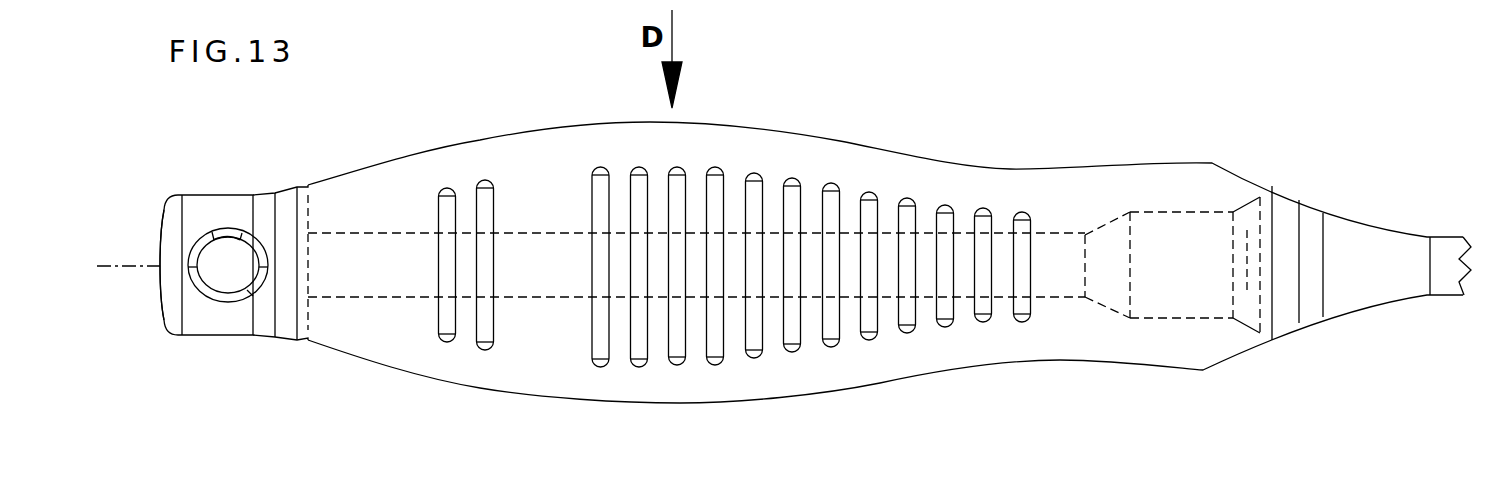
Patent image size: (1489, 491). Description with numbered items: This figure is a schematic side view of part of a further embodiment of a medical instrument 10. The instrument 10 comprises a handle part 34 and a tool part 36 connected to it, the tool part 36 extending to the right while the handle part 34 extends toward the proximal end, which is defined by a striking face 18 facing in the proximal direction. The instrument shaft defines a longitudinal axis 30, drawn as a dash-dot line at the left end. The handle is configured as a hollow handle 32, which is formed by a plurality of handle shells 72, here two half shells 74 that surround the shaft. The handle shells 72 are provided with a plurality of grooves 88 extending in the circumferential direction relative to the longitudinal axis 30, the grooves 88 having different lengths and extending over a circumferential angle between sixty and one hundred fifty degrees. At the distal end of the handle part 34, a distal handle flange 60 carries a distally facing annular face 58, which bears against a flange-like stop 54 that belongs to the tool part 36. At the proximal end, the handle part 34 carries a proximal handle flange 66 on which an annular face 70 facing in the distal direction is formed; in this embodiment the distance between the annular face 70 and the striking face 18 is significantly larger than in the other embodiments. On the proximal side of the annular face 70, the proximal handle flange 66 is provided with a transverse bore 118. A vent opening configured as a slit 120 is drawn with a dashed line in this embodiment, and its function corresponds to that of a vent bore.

The medical instrument 10 is at (885, 255).
The striking face 18 is at (162, 278).
The longitudinal axis 30 is at (113, 263).
The hollow handle 32 is at (963, 381).
The handle part 34 is at (533, 236).
The tool part 36 is at (1408, 208).
The flange-like stop 54 is at (1313, 321).
The annular face 58 is at (1300, 215).
The distal handle flange 60 is at (1242, 208).
The proximal handle flange 66 is at (221, 172).
The annular face 70 is at (302, 190).
The handle shells 72 is at (811, 204).
The half shells 74 is at (829, 114).
The grooves 88 is at (485, 340).
The transverse bore 118 is at (233, 287).
The slit 120 is at (1247, 262).